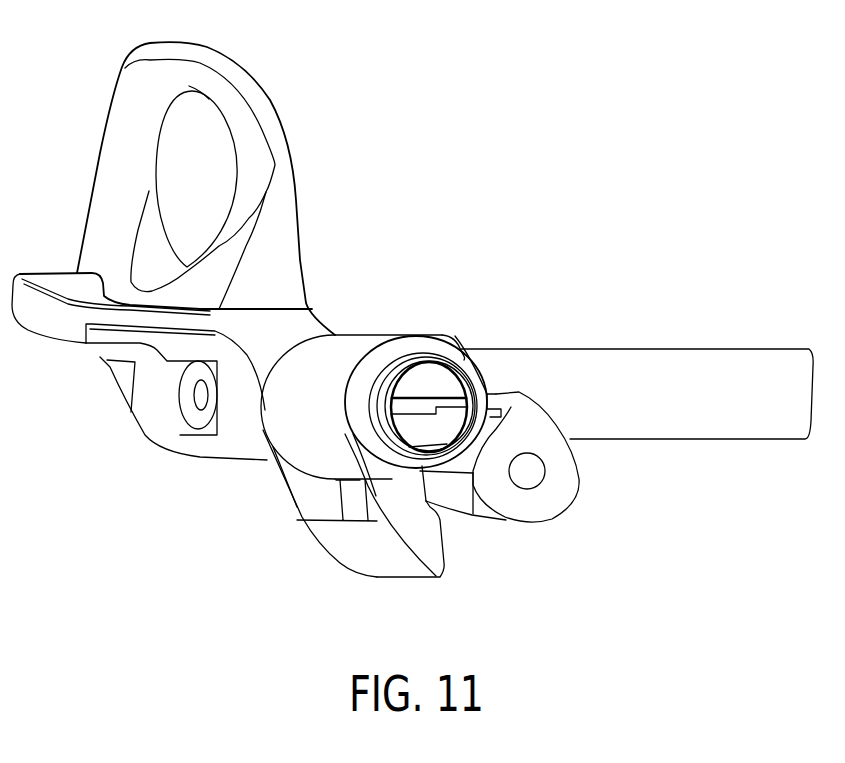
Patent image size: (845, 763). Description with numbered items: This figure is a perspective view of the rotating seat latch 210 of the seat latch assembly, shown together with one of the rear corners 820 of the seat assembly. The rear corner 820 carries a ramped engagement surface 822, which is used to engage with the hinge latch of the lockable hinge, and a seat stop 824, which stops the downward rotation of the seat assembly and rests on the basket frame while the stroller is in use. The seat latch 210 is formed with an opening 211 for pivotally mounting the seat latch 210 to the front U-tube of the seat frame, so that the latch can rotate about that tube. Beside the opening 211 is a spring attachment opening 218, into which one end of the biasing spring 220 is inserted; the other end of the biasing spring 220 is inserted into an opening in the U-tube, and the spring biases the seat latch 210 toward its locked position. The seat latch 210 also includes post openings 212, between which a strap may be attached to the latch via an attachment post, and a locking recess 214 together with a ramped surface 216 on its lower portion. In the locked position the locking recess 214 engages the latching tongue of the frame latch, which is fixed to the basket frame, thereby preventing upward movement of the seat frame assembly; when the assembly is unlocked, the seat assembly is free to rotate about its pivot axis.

The rear corner 820 is at (253, 83).
The ramped engagement surface 822 is at (62, 278).
The seat stop 824 is at (82, 343).
The seat latch 210 is at (370, 338).
The opening 211 is at (432, 377).
The biasing spring 220 is at (462, 352).
The spring attachment opening 218 is at (490, 393).
The post openings 212 is at (550, 477).
The locking recess 214 is at (320, 520).
The ramped surface 216 is at (377, 553).